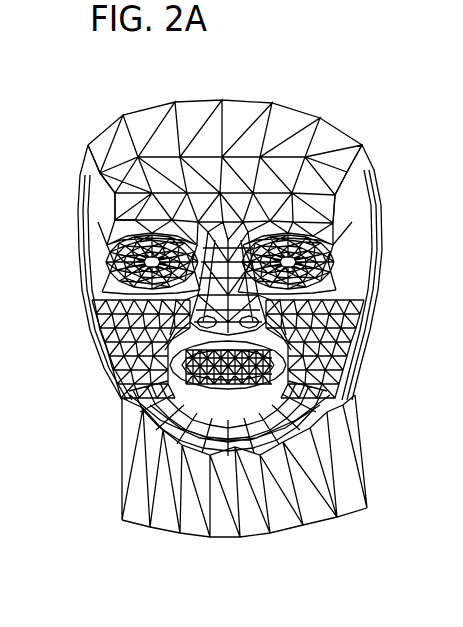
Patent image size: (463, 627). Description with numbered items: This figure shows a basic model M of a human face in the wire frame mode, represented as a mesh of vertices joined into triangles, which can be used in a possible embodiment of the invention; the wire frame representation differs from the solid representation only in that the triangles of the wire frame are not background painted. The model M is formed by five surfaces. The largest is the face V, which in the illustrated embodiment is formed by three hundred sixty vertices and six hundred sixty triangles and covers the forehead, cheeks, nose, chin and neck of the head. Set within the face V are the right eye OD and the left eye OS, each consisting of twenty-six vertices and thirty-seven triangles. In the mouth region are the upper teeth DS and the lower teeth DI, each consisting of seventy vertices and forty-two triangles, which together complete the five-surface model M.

The basic model of human face M is at (70, 123).
The face V is at (305, 125).
The right eye OD is at (302, 245).
The left eye OS is at (95, 285).
The upper teeth DS is at (180, 355).
The lower teeth DI is at (262, 378).